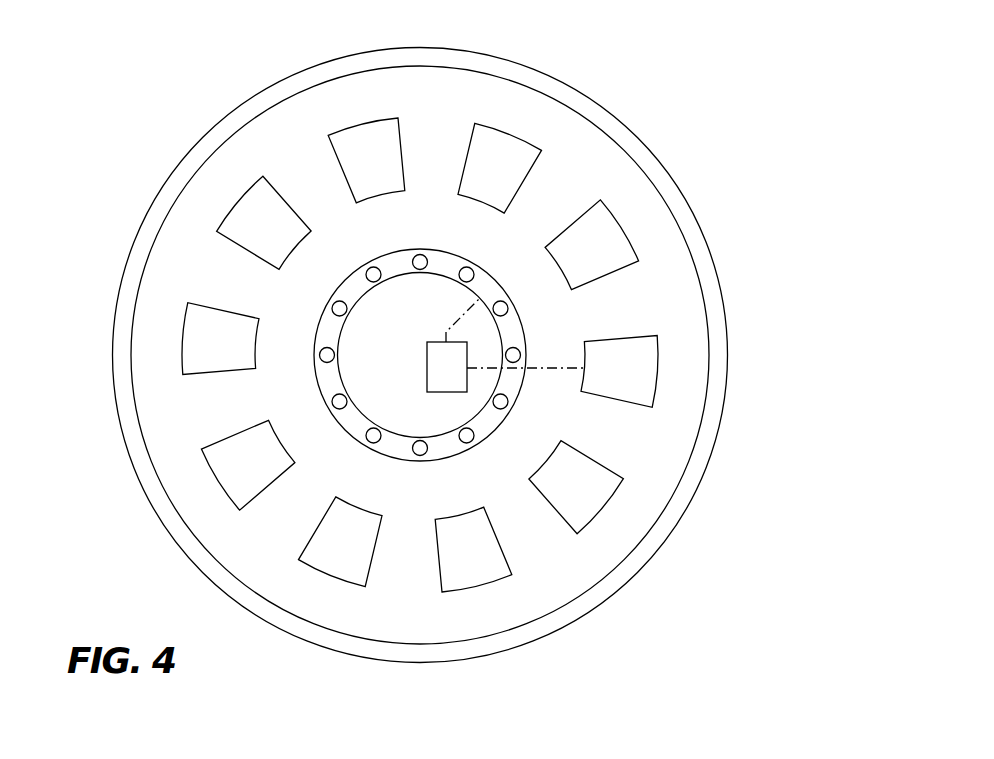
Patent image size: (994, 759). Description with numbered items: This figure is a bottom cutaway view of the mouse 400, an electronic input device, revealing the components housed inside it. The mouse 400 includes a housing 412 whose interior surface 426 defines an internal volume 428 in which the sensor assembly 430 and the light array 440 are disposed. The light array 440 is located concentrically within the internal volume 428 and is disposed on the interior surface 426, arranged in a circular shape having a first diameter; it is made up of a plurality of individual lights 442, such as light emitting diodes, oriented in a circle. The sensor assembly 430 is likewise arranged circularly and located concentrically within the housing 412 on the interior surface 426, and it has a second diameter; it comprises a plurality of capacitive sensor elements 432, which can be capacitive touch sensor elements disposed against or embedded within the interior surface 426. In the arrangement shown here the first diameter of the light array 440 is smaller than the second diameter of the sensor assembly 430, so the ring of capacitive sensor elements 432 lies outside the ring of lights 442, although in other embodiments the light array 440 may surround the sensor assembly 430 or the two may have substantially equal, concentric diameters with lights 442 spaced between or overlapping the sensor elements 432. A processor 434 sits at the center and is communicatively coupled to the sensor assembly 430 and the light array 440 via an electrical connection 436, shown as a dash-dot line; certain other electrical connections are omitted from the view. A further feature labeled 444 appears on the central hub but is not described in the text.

The mouse 400 is at (740, 272).
The housing 412 is at (137, 471).
The interior surface 426 is at (176, 245).
The internal volume 428 is at (590, 178).
The sensor assembly 430 is at (211, 346).
The capacitive sensor elements 432 is at (627, 390).
The processor 434 is at (426, 371).
The electrical connection 436 is at (455, 330).
The light array 440 is at (357, 286).
The lights 442 is at (503, 301).
The hub flange 444 is at (441, 262).